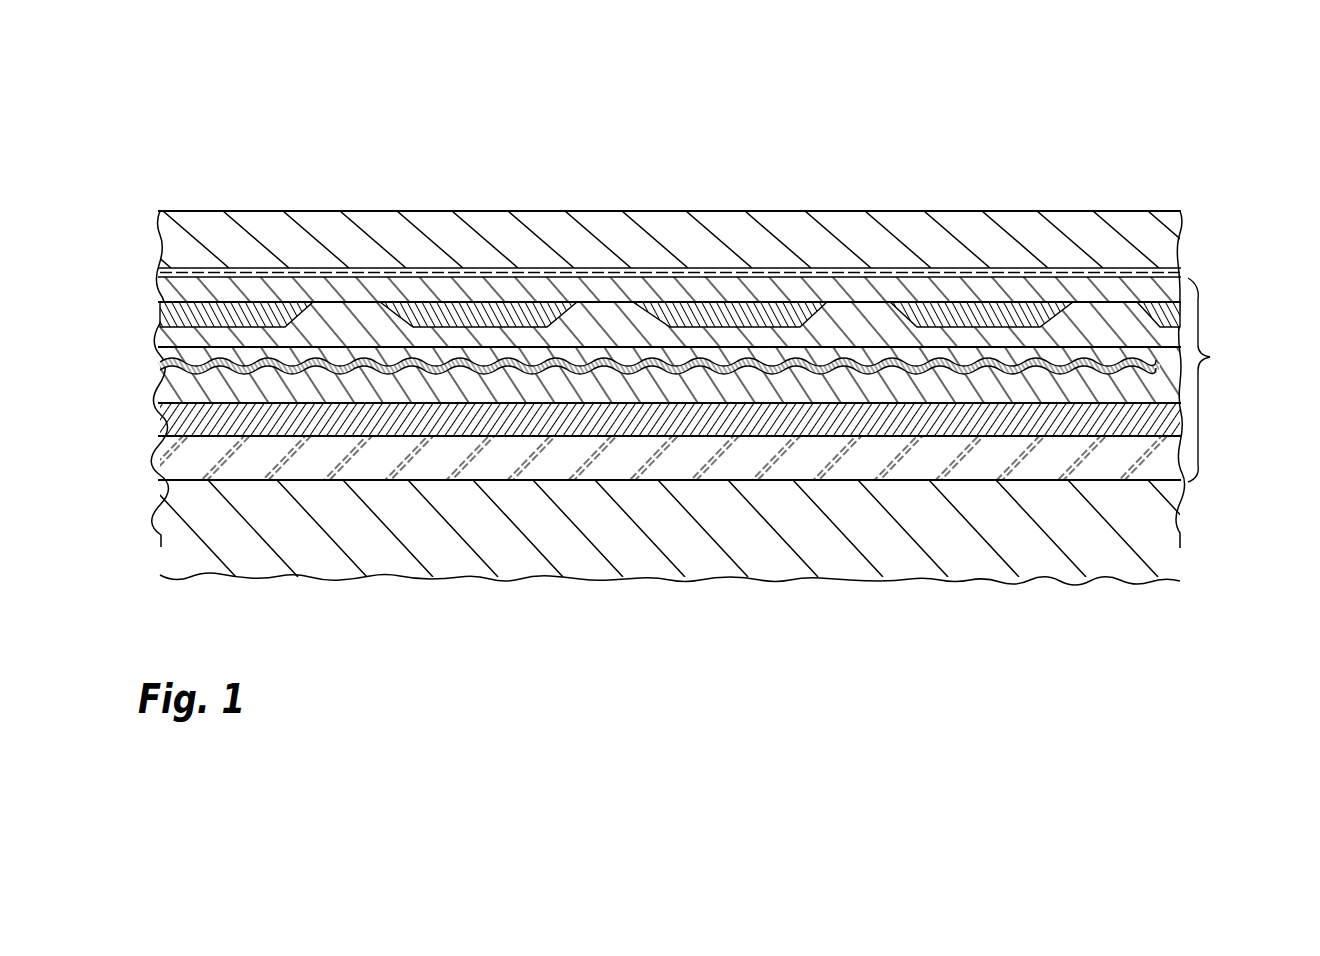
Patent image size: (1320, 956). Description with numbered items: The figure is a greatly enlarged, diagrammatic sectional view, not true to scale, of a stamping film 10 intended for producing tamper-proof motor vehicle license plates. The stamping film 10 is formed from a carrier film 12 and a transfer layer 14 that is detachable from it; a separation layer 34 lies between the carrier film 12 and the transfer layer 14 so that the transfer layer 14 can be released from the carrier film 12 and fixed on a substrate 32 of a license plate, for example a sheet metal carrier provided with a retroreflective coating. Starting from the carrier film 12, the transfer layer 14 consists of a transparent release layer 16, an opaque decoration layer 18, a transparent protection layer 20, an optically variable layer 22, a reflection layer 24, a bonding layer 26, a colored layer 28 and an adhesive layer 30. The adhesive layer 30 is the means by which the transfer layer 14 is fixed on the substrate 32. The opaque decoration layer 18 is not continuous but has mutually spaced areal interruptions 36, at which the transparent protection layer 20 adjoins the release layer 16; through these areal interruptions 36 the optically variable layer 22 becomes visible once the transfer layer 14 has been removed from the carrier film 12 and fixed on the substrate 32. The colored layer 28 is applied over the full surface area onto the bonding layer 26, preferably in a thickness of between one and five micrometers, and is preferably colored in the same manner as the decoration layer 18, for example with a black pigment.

The stamping film 10 is at (1032, 140).
The carrier film 12 is at (757, 243).
The transfer layer 14 is at (1212, 357).
The transparent release layer 16 is at (292, 286).
The opaque decoration layer 18 is at (468, 314).
The transparent protection layer 20 is at (507, 338).
The optically variable layer 22 is at (707, 355).
The reflection layer 24 is at (601, 374).
The bonding layer 26 is at (655, 395).
The colored layer 28 is at (752, 420).
The adhesive layer 30 is at (885, 460).
The substrate 32 is at (1065, 527).
The separation layer 34 is at (880, 270).
The areal interruptions 36 is at (353, 308).